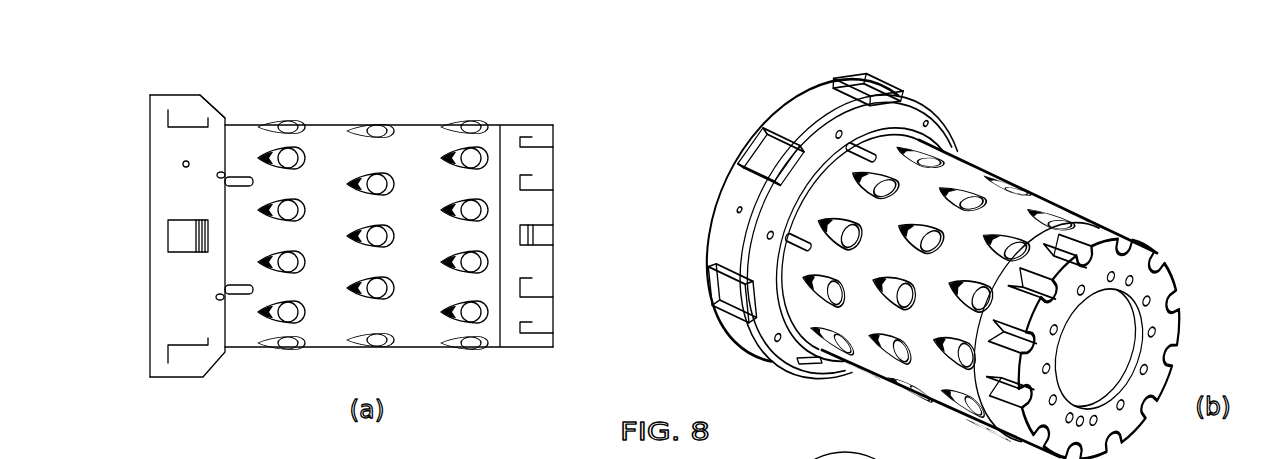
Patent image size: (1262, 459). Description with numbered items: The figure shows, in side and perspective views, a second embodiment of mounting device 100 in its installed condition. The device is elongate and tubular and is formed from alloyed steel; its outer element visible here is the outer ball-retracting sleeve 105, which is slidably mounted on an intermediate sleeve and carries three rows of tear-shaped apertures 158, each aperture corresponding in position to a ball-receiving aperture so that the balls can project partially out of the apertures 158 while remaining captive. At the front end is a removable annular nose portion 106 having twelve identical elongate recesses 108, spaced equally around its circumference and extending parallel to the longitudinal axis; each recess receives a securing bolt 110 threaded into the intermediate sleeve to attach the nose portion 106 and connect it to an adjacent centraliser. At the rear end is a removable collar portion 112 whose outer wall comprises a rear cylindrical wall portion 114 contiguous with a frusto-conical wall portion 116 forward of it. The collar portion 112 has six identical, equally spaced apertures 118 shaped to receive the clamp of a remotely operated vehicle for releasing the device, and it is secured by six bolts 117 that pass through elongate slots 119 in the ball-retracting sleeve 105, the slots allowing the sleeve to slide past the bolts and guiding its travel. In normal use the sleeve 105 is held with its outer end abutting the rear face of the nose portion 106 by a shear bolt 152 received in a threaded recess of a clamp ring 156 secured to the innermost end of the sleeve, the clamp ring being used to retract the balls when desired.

The mounting device 100 is at (400, 86).
The outer ball-retracting sleeve 105 is at (420, 132).
The nose portion 106 is at (542, 102).
The recesses 108 is at (547, 330).
The securing bolt 110 is at (530, 233).
The collar portion 112 is at (195, 88).
The rear cylindrical wall portion 114 is at (166, 97).
The frusto-conical wall portion 116 is at (207, 102).
The bolts 117 is at (223, 175).
The apertures 118 is at (193, 115).
The elongate slots 119 is at (240, 186).
The shear bolt 152 is at (180, 163).
The clamp ring 156 is at (200, 243).
The tear-shaped apertures 158 is at (362, 152).